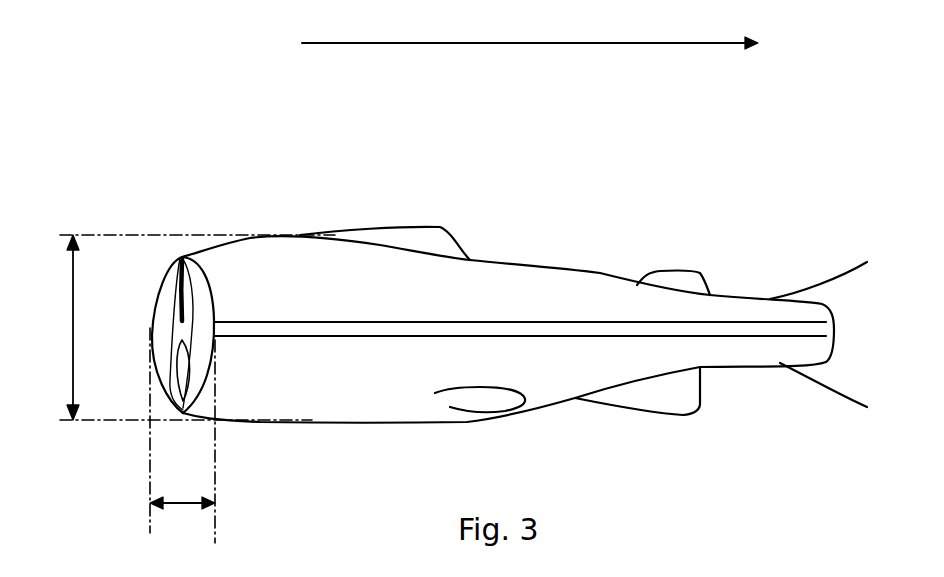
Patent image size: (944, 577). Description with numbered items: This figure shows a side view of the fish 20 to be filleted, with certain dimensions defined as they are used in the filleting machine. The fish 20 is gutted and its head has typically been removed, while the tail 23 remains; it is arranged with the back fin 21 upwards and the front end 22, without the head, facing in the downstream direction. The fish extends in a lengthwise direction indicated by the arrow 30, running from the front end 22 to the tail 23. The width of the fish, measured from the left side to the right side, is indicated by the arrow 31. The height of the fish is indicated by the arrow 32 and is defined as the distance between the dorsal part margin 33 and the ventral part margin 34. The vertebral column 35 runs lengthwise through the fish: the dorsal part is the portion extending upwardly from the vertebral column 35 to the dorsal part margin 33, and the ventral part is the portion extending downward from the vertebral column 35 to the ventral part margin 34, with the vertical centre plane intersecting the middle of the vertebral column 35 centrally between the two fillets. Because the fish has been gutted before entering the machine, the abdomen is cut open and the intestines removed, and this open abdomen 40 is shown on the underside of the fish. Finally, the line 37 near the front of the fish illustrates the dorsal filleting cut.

The fish 20 is at (400, 400).
The back fin 21 is at (442, 240).
The front end 22 is at (164, 303).
The tail 23 is at (862, 383).
The arrow indicating lengthwise direction 30 is at (530, 30).
The arrow indicating width 31 is at (182, 437).
The arrow indicating height 32 is at (184, 327).
The dorsal part margin 33 is at (580, 270).
The ventral part margin 34 is at (311, 423).
The vertebral column 35 is at (181, 334).
The dorsal filleting cut line 37 is at (182, 322).
The open abdomen 40 is at (183, 364).